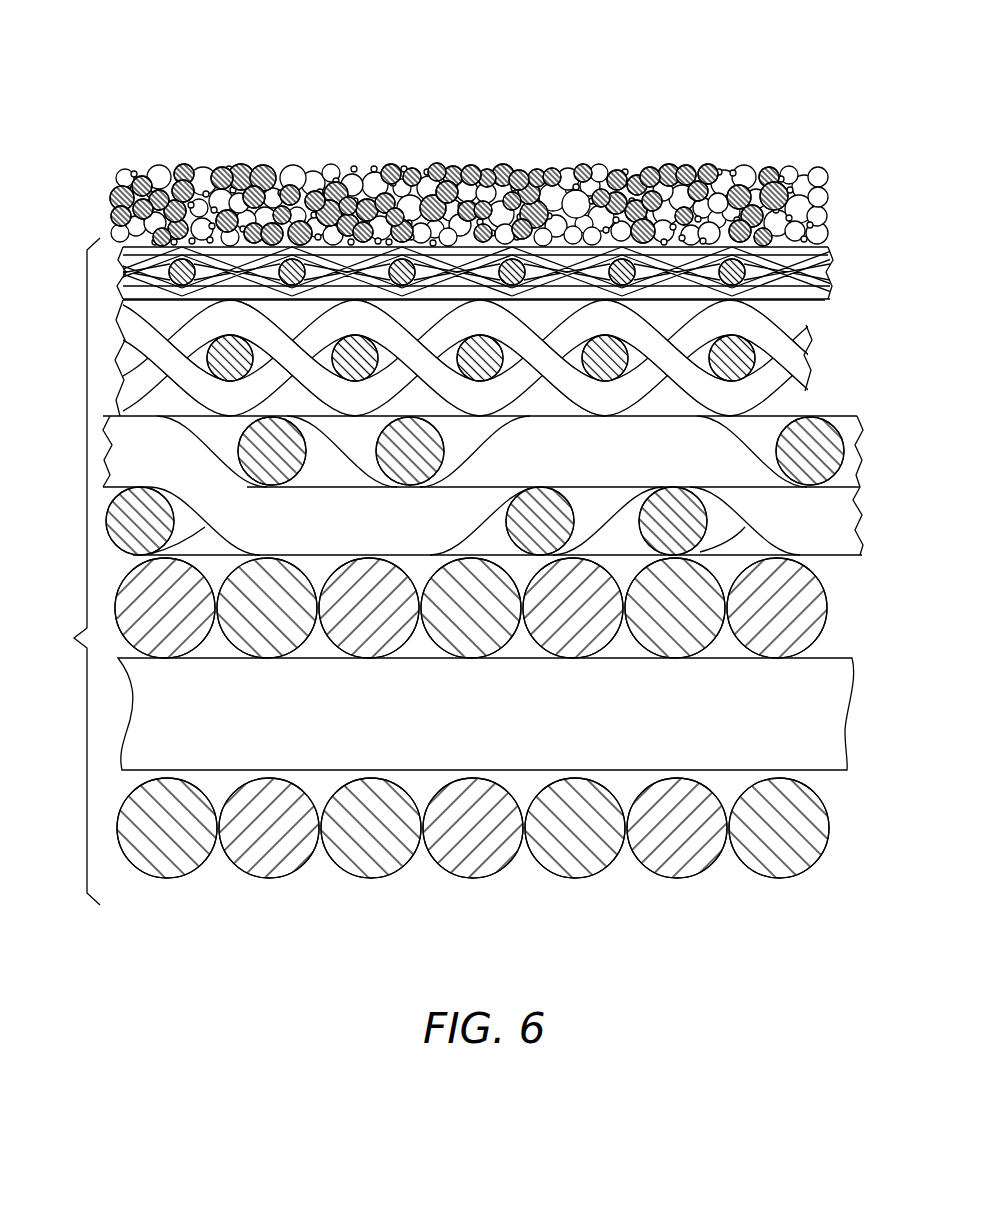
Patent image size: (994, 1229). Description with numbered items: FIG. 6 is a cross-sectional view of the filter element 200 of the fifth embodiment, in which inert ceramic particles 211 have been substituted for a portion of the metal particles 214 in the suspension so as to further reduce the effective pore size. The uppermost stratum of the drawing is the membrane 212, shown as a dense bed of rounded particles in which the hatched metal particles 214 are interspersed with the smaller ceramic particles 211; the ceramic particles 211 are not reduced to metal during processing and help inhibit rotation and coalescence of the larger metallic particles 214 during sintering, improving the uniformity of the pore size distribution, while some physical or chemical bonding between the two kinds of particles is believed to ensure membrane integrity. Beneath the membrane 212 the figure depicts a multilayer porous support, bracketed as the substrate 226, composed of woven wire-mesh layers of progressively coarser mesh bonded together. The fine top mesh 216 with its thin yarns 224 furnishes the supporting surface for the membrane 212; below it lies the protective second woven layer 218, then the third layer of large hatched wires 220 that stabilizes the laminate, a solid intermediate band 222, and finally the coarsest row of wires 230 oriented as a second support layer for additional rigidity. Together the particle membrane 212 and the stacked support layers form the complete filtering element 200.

The filter element 200 is at (567, 78).
The ceramic particles 211 is at (108, 215).
The membrane 212 is at (773, 167).
The metal particles 214 is at (183, 167).
The scrim layer 216 is at (833, 257).
The woven fabric layer 218 is at (797, 385).
The yarn layer 220 is at (838, 560).
The film layer 222 is at (812, 730).
The scrim yarns 224 is at (782, 243).
The backing assembly 226 is at (73, 638).
The yarns 230 is at (452, 877).